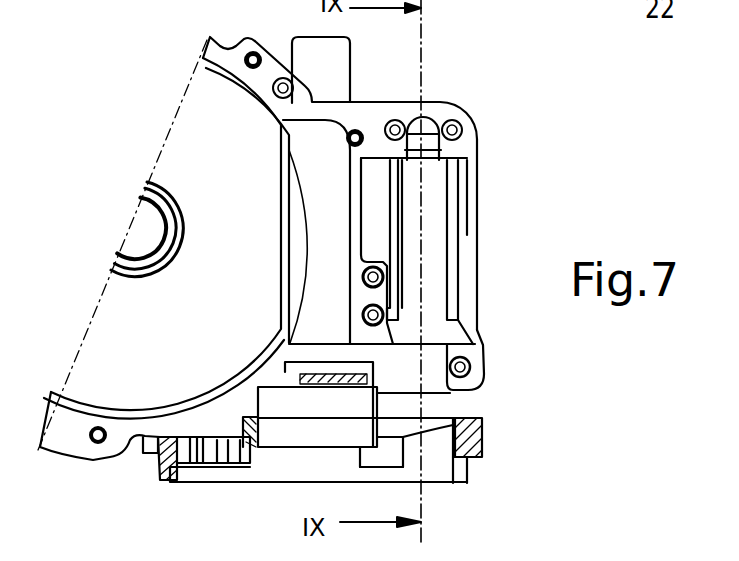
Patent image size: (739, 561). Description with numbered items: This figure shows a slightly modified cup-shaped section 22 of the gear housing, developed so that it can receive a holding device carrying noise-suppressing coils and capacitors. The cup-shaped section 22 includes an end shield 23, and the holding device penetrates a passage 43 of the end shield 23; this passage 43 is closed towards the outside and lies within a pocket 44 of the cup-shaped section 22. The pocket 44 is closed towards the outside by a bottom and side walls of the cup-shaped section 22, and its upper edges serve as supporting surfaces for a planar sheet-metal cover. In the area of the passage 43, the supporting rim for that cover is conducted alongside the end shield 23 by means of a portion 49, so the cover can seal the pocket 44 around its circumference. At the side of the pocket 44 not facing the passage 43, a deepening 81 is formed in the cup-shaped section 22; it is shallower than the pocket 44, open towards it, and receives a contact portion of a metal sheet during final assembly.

The cup-shaped section of the gear housing 22 is at (313, 107).
The deepening 81 is at (437, 127).
The pocket 44 is at (430, 212).
The portion of the supporting rim 49 is at (428, 357).
The passage 43 is at (447, 398).
The end shield 23 is at (480, 442).